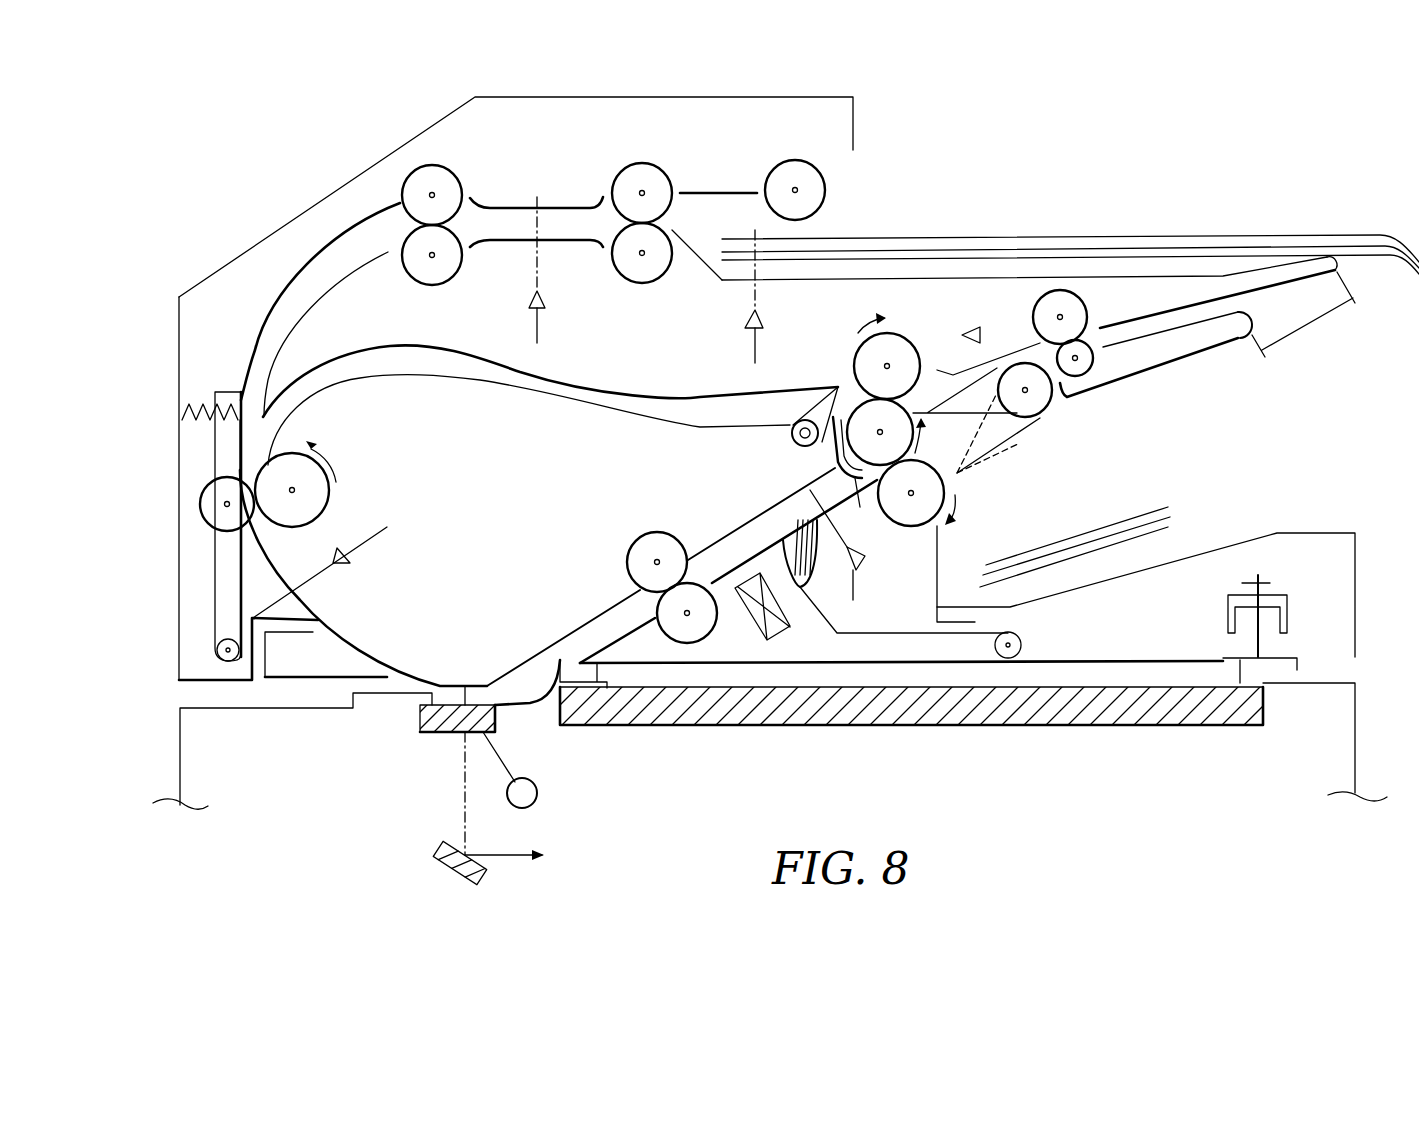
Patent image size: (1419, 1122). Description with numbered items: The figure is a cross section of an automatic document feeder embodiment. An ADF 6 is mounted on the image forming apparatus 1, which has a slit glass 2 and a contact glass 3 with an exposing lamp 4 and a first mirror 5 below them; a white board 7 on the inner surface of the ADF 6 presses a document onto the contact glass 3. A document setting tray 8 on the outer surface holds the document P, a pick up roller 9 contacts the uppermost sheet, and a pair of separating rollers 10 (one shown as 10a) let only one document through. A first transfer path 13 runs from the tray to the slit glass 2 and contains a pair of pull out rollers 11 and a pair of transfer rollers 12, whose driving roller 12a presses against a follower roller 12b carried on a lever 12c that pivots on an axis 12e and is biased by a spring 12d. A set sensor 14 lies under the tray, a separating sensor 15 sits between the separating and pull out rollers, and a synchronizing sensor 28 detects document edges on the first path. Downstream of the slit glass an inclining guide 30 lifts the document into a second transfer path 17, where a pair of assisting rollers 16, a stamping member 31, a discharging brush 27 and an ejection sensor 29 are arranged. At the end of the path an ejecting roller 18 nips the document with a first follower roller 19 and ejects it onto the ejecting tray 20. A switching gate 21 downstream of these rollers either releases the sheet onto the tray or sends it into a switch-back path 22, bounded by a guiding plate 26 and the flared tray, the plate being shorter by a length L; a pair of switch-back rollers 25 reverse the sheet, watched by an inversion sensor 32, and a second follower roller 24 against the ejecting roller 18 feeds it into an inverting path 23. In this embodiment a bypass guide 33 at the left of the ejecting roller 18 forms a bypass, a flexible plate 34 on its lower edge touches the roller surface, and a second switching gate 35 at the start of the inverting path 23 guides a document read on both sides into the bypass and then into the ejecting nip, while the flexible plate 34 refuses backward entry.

The image forming apparatus 1 is at (180, 765).
The slit glass 2 is at (420, 712).
The contact glass 3 is at (1158, 725).
The exposing lamp 4 is at (537, 800).
The first mirror 5 is at (450, 873).
The ADF 6 is at (210, 275).
The white board 7 is at (1188, 670).
The document setting tray 8 is at (1150, 277).
The pick up roller 9 is at (795, 160).
The separating rollers 10 is at (642, 163).
The pinch roller 10a is at (642, 283).
The pull out rollers 11 is at (422, 165).
The transfer rollers 12 is at (345, 456).
The driving roller 12a is at (330, 510).
The follower roller 12b is at (200, 505).
The lever 12c is at (215, 618).
The spring 12d is at (195, 410).
The axis 12e is at (218, 652).
The first transfer path 13 is at (337, 617).
The set sensor 14 is at (745, 316).
The separating sensor 15 is at (528, 300).
The assisting rollers 16 is at (672, 638).
The second transfer path 17 is at (600, 622).
The ejecting roller 18 is at (853, 403).
The first follower roller 19 is at (908, 527).
The ejecting tray 20 is at (1250, 537).
The switching gate 21 is at (1005, 435).
The switch-back path 22 is at (1180, 318).
The inverting path 23 is at (443, 380).
The second follower roller 24 is at (913, 347).
The switch-back rollers 25 is at (1083, 310).
The guiding plate 26 is at (1125, 380).
The discharging brush 27 is at (803, 588).
The synchronizing sensor 28 is at (350, 558).
The ejection sensor 29 is at (848, 565).
The inclining guide 30 is at (530, 703).
The stamping member 31 is at (757, 632).
The inversion sensor 32 is at (980, 332).
The bypass guide 33 is at (830, 455).
The flexible plate 34 is at (856, 480).
The second switching gate 35 is at (790, 425).
The document P is at (950, 237).
The length L is at (1302, 325).